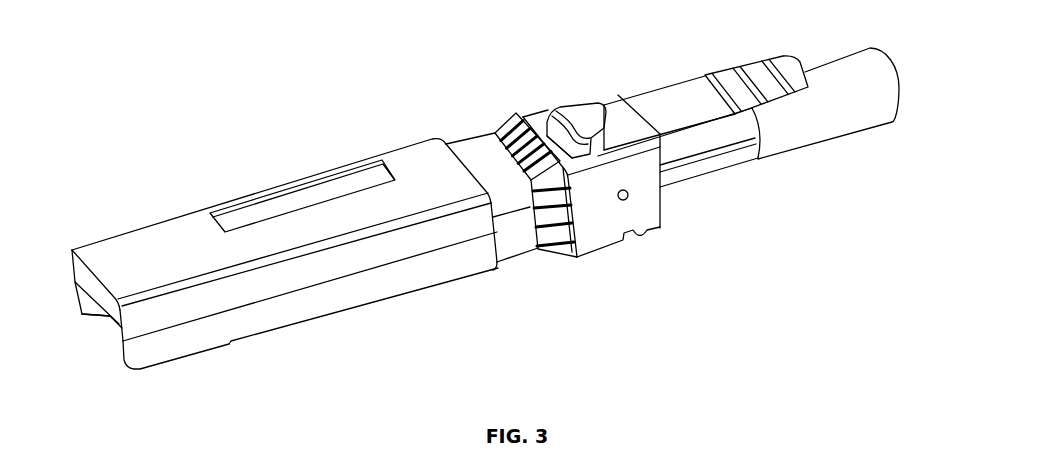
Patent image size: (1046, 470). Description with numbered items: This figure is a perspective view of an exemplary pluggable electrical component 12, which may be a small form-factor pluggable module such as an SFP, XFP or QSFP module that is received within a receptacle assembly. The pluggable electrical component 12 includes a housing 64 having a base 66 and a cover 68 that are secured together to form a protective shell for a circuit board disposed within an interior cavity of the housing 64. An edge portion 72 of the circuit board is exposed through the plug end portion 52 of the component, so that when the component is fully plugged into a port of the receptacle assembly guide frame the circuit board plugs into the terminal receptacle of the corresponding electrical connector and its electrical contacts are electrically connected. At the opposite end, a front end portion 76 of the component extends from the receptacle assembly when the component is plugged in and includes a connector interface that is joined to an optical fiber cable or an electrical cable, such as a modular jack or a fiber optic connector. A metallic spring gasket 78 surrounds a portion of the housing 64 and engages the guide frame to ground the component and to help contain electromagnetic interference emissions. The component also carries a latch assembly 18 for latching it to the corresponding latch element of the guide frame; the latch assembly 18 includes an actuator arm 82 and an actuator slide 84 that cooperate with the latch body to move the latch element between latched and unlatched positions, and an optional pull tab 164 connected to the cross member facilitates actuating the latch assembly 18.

The pluggable electrical component 12 is at (181, 128).
The plug end portion 52 is at (72, 236).
The cover 68 is at (112, 263).
The housing 64 is at (470, 278).
The base 66 is at (277, 334).
The edge portion 72 is at (92, 333).
The metallic spring gasket 78 is at (476, 152).
The front end portion 76 is at (568, 102).
The latch assembly 18 is at (580, 90).
The actuator arm 82 is at (640, 193).
The actuator slide 84 is at (661, 229).
The pull tab 164 is at (741, 76).